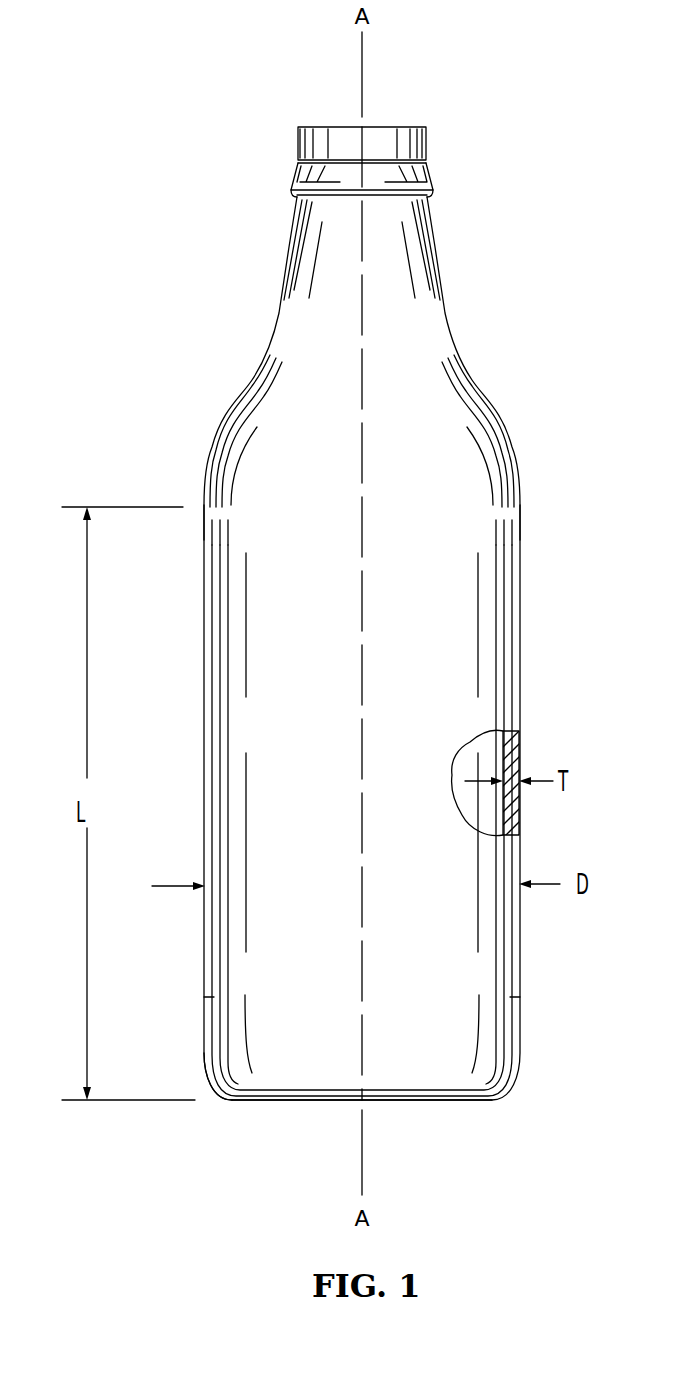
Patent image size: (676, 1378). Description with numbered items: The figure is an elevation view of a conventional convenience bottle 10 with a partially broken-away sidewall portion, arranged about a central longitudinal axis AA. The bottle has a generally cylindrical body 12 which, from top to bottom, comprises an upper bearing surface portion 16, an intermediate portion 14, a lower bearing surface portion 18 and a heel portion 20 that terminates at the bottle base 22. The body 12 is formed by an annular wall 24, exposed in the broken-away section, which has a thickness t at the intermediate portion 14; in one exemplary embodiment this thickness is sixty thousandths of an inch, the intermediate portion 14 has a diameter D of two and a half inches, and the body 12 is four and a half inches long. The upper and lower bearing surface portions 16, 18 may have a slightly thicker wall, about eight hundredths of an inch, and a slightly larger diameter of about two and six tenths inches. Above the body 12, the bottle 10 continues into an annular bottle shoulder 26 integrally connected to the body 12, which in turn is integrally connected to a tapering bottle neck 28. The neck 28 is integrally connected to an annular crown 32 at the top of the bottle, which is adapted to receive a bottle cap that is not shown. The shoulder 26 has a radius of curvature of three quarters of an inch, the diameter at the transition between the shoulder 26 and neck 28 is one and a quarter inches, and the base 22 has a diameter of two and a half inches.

The bottle 10 is at (119, 148).
The body 12 is at (247, 727).
The intermediate portion 14 is at (275, 815).
The upper bearing surface portion 16 is at (205, 520).
The lower bearing surface portion 18 is at (205, 1015).
The heel portion 20 is at (212, 1087).
The bottle base 22 is at (245, 1101).
The annular wall 24 is at (515, 745).
The bottle shoulder 26 is at (210, 452).
The bottle neck 28 is at (285, 258).
The crown 32 is at (297, 140).